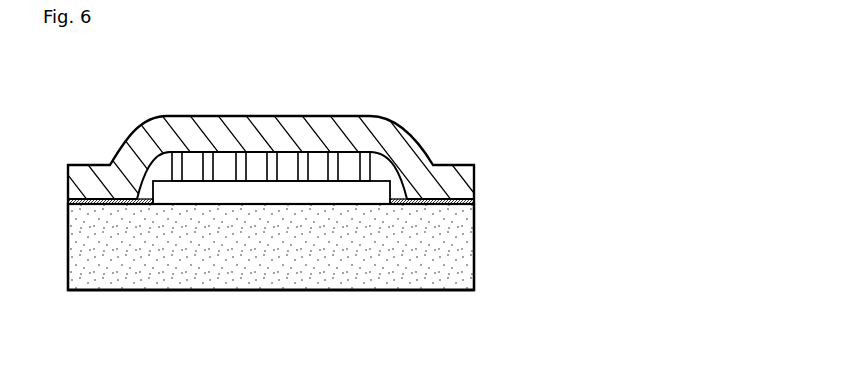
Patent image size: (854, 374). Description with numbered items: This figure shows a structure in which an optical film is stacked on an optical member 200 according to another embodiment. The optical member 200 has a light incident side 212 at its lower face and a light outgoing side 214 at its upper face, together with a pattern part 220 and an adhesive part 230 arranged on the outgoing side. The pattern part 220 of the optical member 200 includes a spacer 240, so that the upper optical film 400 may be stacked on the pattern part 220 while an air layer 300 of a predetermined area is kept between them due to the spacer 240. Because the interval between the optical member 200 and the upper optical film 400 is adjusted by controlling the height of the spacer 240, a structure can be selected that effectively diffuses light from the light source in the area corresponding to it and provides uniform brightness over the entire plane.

The optical member 200 is at (430, 252).
The light incident side 212 is at (117, 290).
The light outgoing side 214 is at (92, 204).
The pattern part 220 is at (393, 188).
The adhesive part 230 is at (474, 202).
The spacer 240 is at (363, 162).
The air layer 300 is at (163, 167).
The upper optical film 400 is at (300, 127).